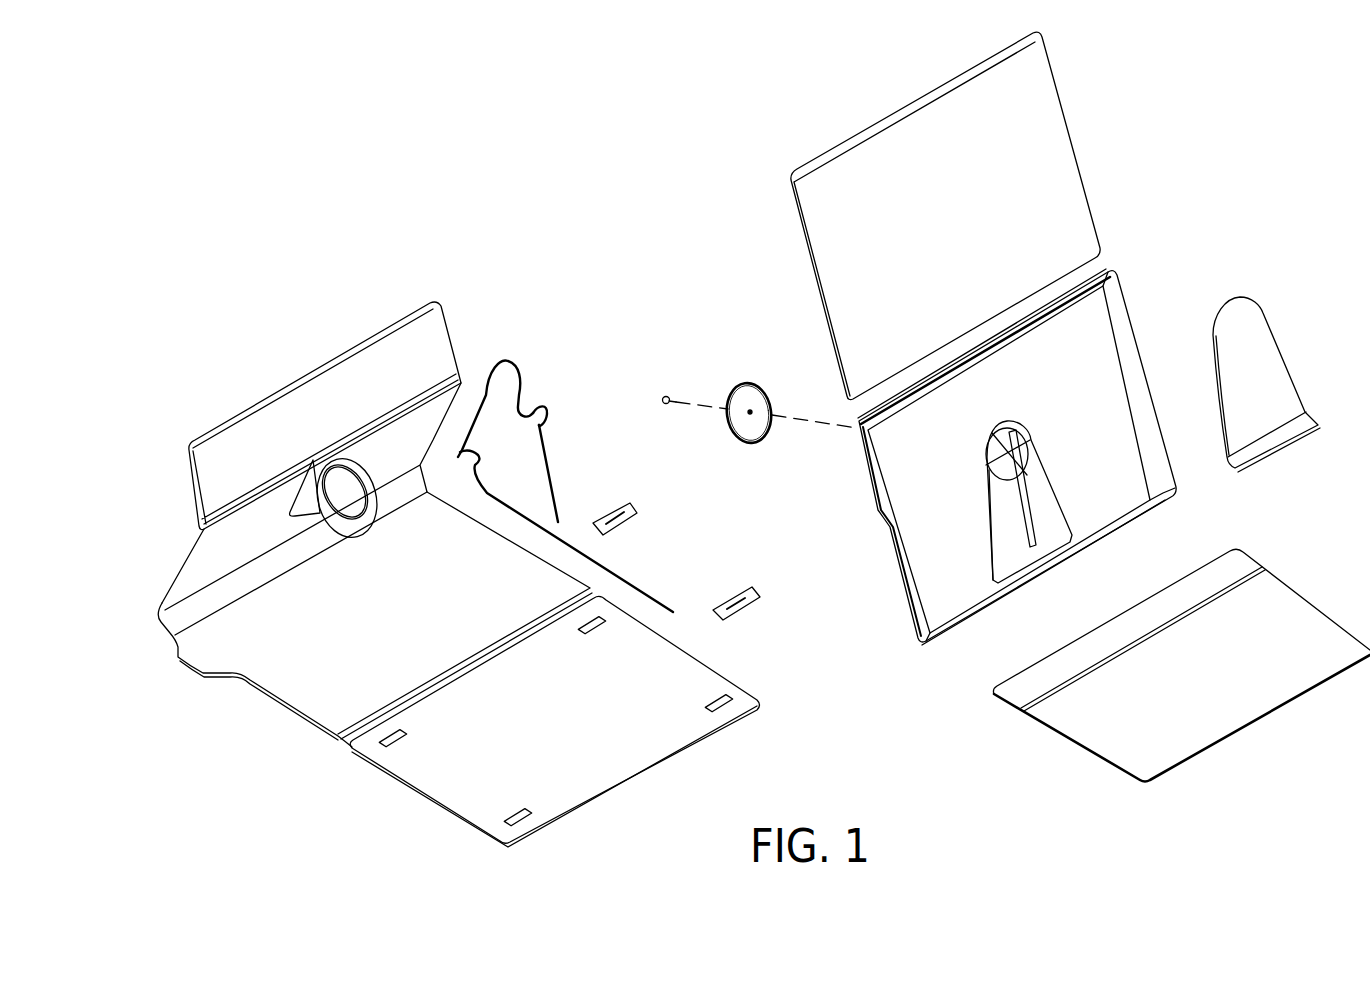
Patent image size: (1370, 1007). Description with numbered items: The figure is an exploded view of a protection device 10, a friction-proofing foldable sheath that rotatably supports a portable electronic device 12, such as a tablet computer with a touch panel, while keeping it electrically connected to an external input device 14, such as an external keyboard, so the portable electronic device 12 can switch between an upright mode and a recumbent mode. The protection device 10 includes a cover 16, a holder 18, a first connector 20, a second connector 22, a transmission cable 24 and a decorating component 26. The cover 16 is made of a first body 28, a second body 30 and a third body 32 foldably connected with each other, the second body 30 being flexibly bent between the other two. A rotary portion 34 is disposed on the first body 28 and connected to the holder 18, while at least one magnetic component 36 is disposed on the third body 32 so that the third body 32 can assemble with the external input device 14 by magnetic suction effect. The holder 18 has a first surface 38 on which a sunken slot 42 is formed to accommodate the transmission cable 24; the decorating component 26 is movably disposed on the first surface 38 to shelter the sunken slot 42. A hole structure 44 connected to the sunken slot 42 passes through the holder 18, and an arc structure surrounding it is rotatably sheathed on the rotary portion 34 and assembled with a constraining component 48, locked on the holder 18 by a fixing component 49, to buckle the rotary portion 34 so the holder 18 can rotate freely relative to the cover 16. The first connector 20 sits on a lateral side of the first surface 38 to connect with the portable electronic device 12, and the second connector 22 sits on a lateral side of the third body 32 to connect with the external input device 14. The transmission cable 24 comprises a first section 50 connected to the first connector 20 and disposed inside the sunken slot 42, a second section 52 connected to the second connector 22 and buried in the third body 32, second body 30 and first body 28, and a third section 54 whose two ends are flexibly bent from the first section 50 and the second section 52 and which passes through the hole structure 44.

The protection device 10 is at (326, 128).
The portable electronic device 12 is at (1062, 173).
The external input device 14 is at (1288, 605).
The cover 16 is at (303, 793).
The holder 18 is at (918, 540).
The first connector 20 is at (623, 523).
The second connector 22 is at (752, 600).
The transmission cable 24 is at (613, 435).
The decorating component 26 is at (1270, 370).
The first body 28 is at (240, 553).
The second body 30 is at (313, 688).
The third body 32 is at (398, 757).
The rotary portion 34 is at (352, 530).
The magnetic component 36 is at (590, 636).
The first surface 38 is at (1108, 377).
The sunken slot 42 is at (1047, 552).
The hole structure 44 is at (965, 463).
The constraining component 48 is at (744, 432).
The fixing component 49 is at (666, 405).
The first section 50 is at (548, 470).
The second section 52 is at (470, 387).
The third section 54 is at (541, 400).